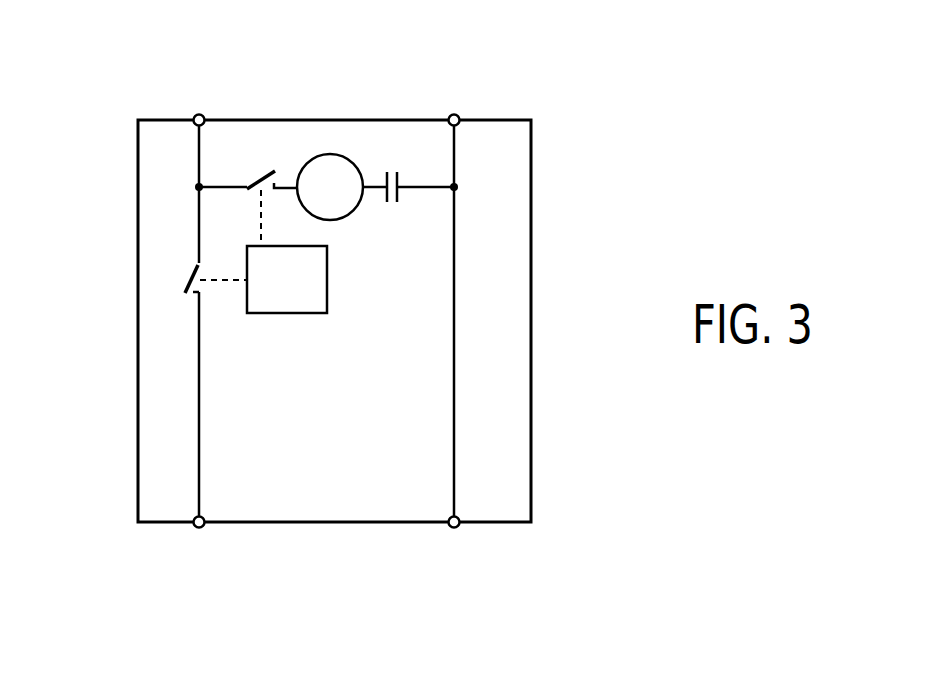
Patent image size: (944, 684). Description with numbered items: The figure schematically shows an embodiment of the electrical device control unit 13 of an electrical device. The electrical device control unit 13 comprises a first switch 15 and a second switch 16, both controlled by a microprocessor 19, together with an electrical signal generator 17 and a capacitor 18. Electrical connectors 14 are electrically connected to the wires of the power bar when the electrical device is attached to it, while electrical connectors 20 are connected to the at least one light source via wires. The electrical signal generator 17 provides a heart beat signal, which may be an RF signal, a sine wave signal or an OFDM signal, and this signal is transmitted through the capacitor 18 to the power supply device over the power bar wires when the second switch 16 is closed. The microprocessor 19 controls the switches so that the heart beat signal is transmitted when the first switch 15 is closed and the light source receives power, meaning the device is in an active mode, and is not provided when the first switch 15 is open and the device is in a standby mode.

The electrical device control unit 13 is at (138, 410).
The electrical connectors 14 is at (202, 100).
The first switch 15 is at (164, 275).
The second switch 16 is at (263, 153).
The electrical signal generator 17 is at (338, 155).
The capacitor 18 is at (390, 154).
The microprocessor 19 is at (327, 261).
The electrical connectors 20 is at (196, 542).